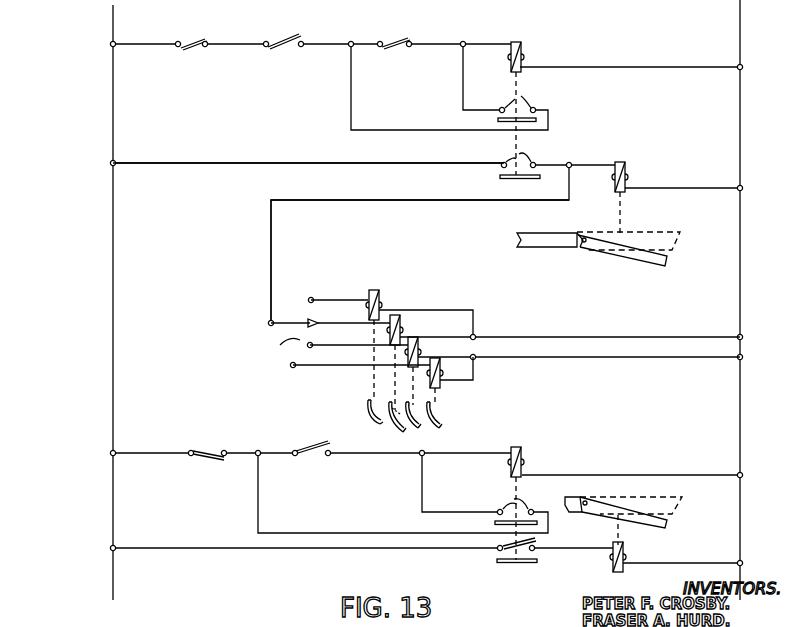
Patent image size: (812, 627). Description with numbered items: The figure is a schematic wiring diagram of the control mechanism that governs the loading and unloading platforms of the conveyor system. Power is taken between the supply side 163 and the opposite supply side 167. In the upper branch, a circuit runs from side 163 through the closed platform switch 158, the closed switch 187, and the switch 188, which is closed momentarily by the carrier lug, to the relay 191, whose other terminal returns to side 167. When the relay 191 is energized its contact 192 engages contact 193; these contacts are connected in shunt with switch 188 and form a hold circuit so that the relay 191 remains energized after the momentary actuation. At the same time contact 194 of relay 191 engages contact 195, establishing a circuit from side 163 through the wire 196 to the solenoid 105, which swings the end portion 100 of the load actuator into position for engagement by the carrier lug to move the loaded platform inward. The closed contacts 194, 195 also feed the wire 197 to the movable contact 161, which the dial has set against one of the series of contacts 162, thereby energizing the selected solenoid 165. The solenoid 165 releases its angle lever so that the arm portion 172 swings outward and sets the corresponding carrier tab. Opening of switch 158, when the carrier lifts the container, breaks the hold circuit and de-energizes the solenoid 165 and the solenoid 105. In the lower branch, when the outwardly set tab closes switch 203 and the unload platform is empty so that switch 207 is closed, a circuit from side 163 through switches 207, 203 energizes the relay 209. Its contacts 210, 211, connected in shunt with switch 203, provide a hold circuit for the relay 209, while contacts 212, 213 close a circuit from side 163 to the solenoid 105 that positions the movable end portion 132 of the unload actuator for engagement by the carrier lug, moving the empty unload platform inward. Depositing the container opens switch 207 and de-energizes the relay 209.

The supply side 163 is at (113, 44).
The supply side 167 is at (740, 50).
The switch 187 is at (192, 41).
The platform switch 158 is at (278, 40).
The switch 188 is at (386, 42).
The relay 191 is at (515, 41).
The contact 193 is at (525, 100).
The contact 192 is at (536, 126).
The contact 195 is at (503, 161).
The contact 194 is at (497, 177).
The wire 196 is at (320, 165).
The solenoid 105 is at (620, 162).
The end portion of actuator 100 is at (638, 257).
The wire 197 is at (272, 258).
The movable contact 161 is at (290, 317).
The solenoid 165 is at (405, 330).
The series of contacts 162 is at (301, 341).
The arm portion of angle lever 172 is at (436, 422).
The switch 207 is at (216, 450).
The switch 203 is at (313, 448).
The relay 209 is at (520, 452).
The contact 211 is at (500, 509).
The contact 210 is at (495, 523).
The contact 213 is at (536, 548).
The contact 212 is at (510, 566).
The movable end portion of actuator 132 is at (674, 516).